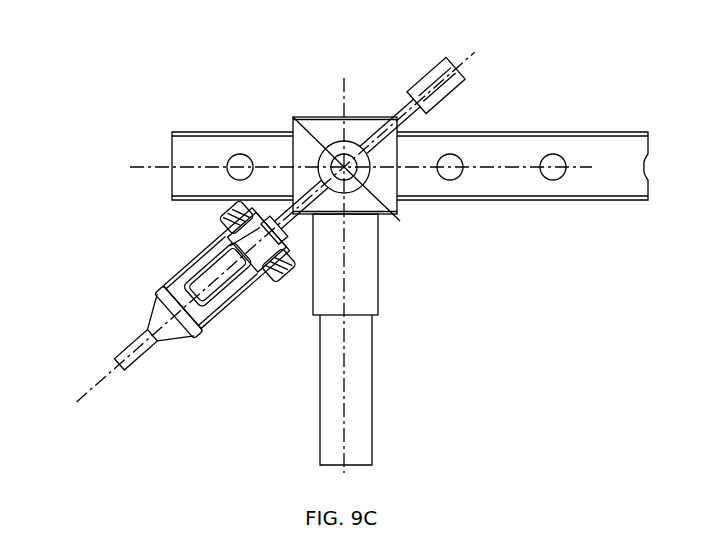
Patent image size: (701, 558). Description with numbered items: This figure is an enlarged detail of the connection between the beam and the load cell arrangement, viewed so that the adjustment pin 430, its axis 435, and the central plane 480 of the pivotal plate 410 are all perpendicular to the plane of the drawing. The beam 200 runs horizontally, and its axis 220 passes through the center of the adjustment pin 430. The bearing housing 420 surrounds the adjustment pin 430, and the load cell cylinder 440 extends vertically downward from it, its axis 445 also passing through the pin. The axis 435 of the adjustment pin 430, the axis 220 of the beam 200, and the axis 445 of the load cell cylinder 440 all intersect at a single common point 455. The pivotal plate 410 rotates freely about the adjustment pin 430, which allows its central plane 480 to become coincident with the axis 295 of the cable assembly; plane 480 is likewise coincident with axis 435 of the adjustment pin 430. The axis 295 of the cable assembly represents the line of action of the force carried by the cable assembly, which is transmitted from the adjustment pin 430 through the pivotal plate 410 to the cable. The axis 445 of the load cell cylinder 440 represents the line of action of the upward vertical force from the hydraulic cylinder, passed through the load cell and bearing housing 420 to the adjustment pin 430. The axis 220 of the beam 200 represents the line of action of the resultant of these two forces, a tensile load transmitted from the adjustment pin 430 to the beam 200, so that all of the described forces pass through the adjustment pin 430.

The beam 200 is at (215, 132).
The axis of beam 220 is at (155, 163).
The axis of cable assembly 295 is at (137, 365).
The pivotal plate 410 is at (428, 72).
The bearing housing 420 is at (325, 117).
The adjustment pin 430 is at (347, 158).
The axis of adjustment pin 435 is at (290, 118).
The load cell cylinder 440 is at (378, 277).
The axis of load cell cylinder 445 is at (345, 100).
The common point 455 is at (400, 221).
The central plane of pivotal plate 480 is at (423, 97).